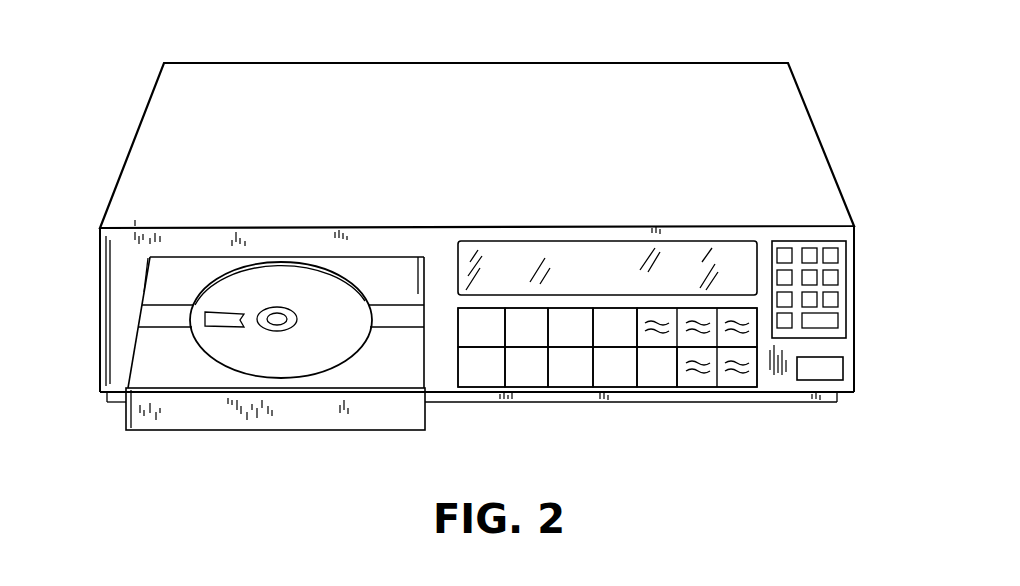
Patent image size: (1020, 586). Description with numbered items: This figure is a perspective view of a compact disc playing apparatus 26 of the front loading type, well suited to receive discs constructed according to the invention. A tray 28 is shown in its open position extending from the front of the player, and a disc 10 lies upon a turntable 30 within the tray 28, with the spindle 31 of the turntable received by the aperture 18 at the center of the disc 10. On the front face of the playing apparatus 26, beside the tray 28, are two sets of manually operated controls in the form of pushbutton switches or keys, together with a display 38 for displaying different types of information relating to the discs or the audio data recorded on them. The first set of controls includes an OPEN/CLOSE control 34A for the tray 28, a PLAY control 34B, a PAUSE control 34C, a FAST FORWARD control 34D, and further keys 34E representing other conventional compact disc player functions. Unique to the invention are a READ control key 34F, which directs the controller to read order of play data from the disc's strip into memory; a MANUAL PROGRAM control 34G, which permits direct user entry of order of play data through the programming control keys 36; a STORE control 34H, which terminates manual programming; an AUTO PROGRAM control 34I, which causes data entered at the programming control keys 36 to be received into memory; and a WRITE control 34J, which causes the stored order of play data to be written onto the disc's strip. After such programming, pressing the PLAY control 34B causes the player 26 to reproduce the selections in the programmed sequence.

The disc 10 is at (282, 364).
The aperture 18 is at (290, 322).
The compact disc playing apparatus 26 is at (375, 63).
The tray 28 is at (130, 427).
The turntable 30 is at (153, 317).
The spindle 31 is at (278, 313).
The OPEN/CLOSE control 34A is at (458, 330).
The PLAY control 34B is at (520, 313).
The PAUSE control 34C is at (569, 313).
The FAST FORWARD control 34D is at (620, 313).
The keys 34E is at (730, 318).
The READ control key 34F is at (467, 387).
The MANUAL PROGRAM control 34G is at (518, 387).
The STORE control 34H is at (568, 387).
The AUTO PROGRAM control 34I is at (625, 387).
The WRITE control 34J is at (667, 387).
The programming control keys 36 is at (840, 265).
The display 38 is at (610, 269).